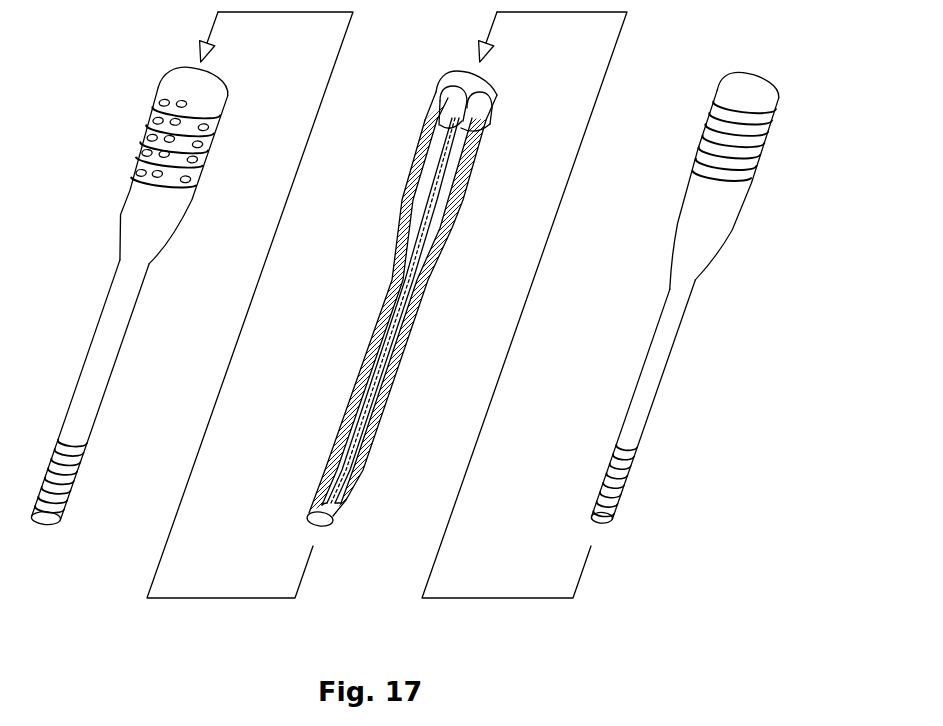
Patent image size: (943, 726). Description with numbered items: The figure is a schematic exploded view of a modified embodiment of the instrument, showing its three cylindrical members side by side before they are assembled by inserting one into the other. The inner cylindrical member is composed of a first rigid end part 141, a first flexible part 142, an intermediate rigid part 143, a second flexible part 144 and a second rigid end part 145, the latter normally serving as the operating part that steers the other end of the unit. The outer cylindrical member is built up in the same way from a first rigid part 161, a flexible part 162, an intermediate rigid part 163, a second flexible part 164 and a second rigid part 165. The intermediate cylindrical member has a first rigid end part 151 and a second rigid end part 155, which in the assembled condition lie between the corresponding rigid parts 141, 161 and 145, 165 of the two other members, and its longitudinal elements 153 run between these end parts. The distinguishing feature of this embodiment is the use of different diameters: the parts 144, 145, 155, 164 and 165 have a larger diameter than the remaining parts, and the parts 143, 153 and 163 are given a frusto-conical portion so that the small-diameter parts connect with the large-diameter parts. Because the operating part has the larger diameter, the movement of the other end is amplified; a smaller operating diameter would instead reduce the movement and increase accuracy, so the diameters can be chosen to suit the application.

The first rigid end part 141 is at (607, 522).
The first flexible part 142 is at (624, 487).
The intermediate rigid part 143 is at (670, 342).
The second flexible part 144 is at (758, 152).
The second rigid end part 145 is at (726, 95).
The first rigid end part 151 is at (336, 519).
The longitudinal elements 153 is at (400, 338).
The second rigid end part 155 is at (499, 101).
The first rigid part 161 is at (50, 520).
The flexible part 162 is at (72, 477).
The intermediate rigid part 163 is at (117, 343).
The second flexible part 164 is at (200, 172).
The second rigid part 165 is at (216, 106).